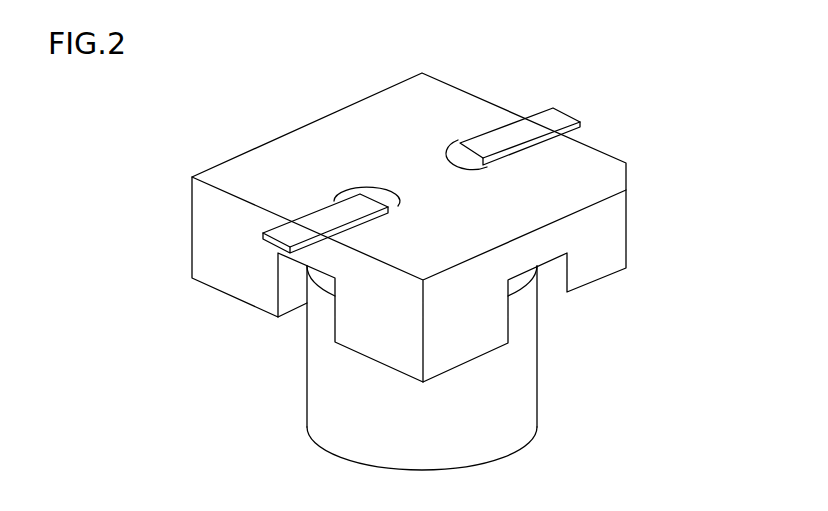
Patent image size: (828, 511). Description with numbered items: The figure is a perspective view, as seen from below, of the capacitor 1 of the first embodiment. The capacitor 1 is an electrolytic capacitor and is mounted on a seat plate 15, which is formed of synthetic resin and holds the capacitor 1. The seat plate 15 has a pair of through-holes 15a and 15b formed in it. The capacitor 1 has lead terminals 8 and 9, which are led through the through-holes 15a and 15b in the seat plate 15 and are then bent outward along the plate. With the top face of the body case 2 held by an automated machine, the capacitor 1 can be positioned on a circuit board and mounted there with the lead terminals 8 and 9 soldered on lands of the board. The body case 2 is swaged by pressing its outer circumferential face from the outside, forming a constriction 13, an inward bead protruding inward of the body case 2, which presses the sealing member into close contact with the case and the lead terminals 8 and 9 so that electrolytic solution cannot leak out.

The capacitor 1 is at (555, 370).
The body case 2 is at (539, 422).
The lead terminal 8 is at (330, 213).
The lead terminal 9 is at (550, 113).
The constriction 13 is at (322, 290).
The seat plate 15 is at (626, 240).
The through-hole 15a is at (380, 191).
The through-hole 15b is at (458, 142).